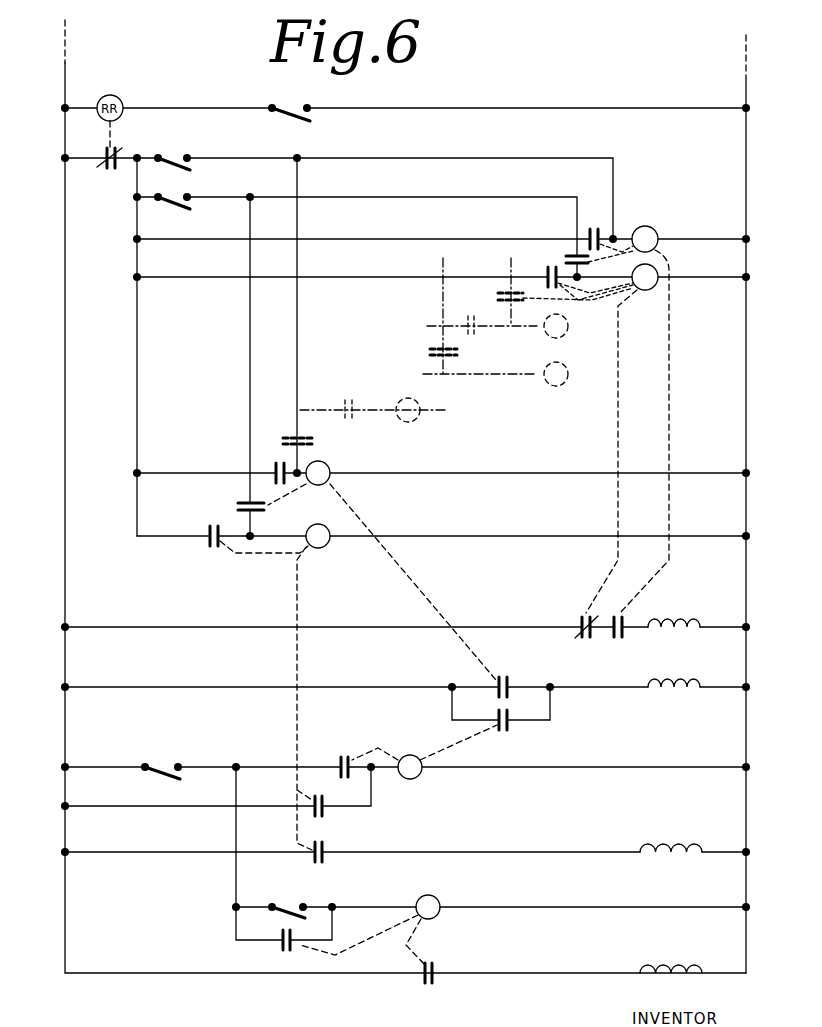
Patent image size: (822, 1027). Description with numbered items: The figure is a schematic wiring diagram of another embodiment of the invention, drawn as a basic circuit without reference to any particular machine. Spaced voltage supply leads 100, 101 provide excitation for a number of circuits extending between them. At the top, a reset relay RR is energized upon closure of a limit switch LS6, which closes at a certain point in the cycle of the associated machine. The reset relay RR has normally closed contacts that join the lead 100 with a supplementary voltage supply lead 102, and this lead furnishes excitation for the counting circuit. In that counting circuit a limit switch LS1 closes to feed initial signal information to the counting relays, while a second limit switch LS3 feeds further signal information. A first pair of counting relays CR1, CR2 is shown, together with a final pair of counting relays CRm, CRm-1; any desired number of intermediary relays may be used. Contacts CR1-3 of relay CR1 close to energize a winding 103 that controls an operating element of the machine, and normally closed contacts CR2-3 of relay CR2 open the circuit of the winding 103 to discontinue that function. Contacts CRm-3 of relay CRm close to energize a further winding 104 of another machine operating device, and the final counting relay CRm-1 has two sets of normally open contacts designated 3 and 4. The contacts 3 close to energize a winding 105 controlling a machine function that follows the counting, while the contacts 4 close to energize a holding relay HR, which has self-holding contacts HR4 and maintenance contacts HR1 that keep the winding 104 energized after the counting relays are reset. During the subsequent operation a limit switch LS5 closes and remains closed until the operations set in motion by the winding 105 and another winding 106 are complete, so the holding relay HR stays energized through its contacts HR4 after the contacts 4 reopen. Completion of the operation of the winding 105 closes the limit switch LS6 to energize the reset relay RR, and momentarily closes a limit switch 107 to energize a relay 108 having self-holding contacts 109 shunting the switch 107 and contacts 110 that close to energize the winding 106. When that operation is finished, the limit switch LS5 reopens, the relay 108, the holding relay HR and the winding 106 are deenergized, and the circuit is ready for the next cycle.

The voltage supply lead 100 is at (65, 252).
The voltage supply lead 101 is at (746, 210).
The supplementary voltage supply lead 102 is at (140, 363).
The winding 103 is at (662, 632).
The winding 104 is at (662, 692).
The winding 105 is at (677, 850).
The winding 106 is at (677, 970).
The limit switch 107 is at (292, 907).
The relay 108 is at (438, 896).
The self-holding contacts 109 is at (282, 942).
The contacts 110 is at (434, 978).
The reset relay RR is at (114, 166).
The limit switch LS6 is at (296, 96).
The limit switch LS1 is at (182, 142).
The limit switch LS3 is at (182, 182).
The limit switch LS5 is at (172, 746).
The counting relay CR1 is at (628, 419).
The counting relay CR2 is at (590, 438).
The counting relay CRm is at (322, 460).
The final counting relay CRm-1 is at (332, 528).
The contacts CRm-3 is at (512, 680).
The normally closed contacts CR2-3 is at (575, 618).
The contacts CR1-3 is at (630, 618).
The self-holding contacts HR4 is at (338, 742).
The maintenance contacts HR1 is at (508, 732).
The holding relay HR is at (424, 752).
The contacts 4 is at (325, 812).
The contacts 3 is at (325, 858).